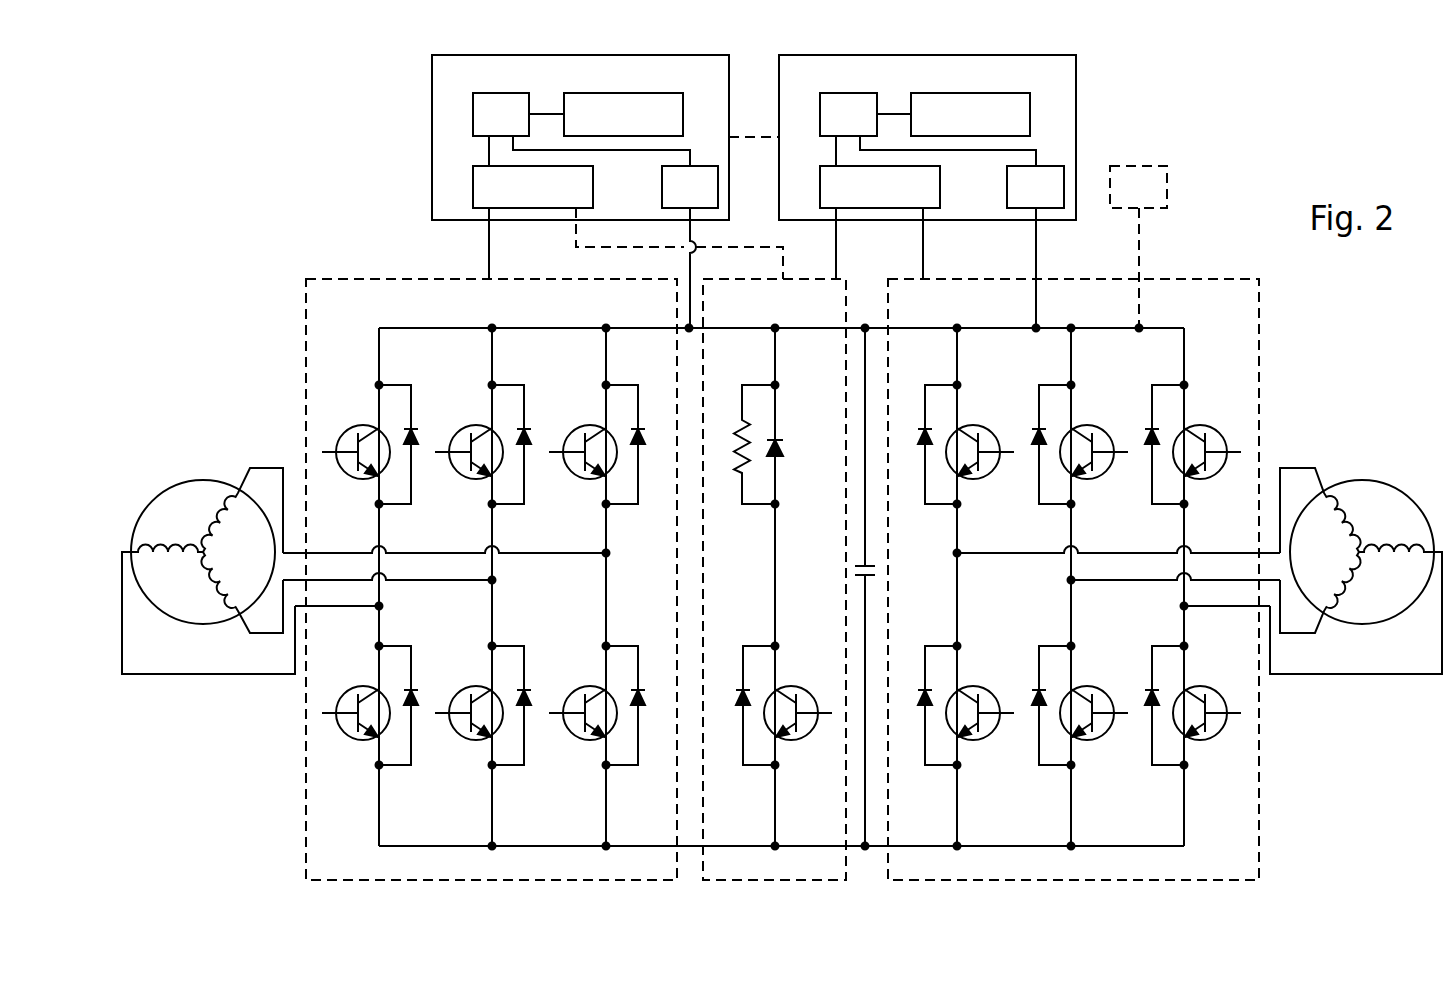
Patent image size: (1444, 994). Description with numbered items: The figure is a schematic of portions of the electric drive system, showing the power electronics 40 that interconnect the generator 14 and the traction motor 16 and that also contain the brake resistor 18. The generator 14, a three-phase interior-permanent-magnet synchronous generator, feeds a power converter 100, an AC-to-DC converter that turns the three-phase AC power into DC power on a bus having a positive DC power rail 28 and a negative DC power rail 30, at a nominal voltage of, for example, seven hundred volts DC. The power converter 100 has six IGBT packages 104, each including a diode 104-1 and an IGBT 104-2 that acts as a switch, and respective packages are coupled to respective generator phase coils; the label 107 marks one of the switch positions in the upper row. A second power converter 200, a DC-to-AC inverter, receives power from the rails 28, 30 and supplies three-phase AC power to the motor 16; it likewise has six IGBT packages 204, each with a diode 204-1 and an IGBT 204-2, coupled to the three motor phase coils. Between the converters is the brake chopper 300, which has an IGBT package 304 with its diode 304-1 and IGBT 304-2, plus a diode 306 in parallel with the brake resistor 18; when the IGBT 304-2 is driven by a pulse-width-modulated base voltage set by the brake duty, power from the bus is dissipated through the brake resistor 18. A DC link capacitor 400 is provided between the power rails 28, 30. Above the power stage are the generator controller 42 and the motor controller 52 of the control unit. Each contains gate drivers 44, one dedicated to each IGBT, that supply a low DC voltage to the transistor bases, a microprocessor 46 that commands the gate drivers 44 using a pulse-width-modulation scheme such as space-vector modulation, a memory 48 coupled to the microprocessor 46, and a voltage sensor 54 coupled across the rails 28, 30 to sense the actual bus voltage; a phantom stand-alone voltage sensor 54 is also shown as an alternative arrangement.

The power electronics 40 is at (1277, 127).
The generator controller 42 is at (432, 103).
The motor controller 52 is at (1076, 85).
The gate driver 44 is at (473, 187).
The microprocessor 46 is at (473, 112).
The memory 48 is at (683, 112).
The voltage sensor 54 is at (662, 193).
The generator 14 is at (161, 530).
The traction motor 16 is at (1362, 530).
The brake resistor 18 is at (742, 470).
The positive DC power rail 28 is at (428, 328).
The negative DC power rail 30 is at (405, 846).
The power converter 100 is at (351, 315).
The power converter 200 is at (1181, 315).
The brake chopper 300 is at (734, 309).
The IGBT package 104 is at (402, 477).
The diode 104-1 is at (419, 436).
The IGBT 104-2 is at (356, 478).
The switch module 107 is at (632, 587).
The IGBT package 204 is at (933, 477).
The diode 204-1 is at (919, 437).
The IGBT 204-2 is at (975, 478).
The IGBT package 304 is at (753, 738).
The diode 304-1 is at (741, 698).
The IGBT 304-2 is at (798, 737).
The diode 306 is at (784, 450).
The DC link capacitor 400 is at (870, 566).